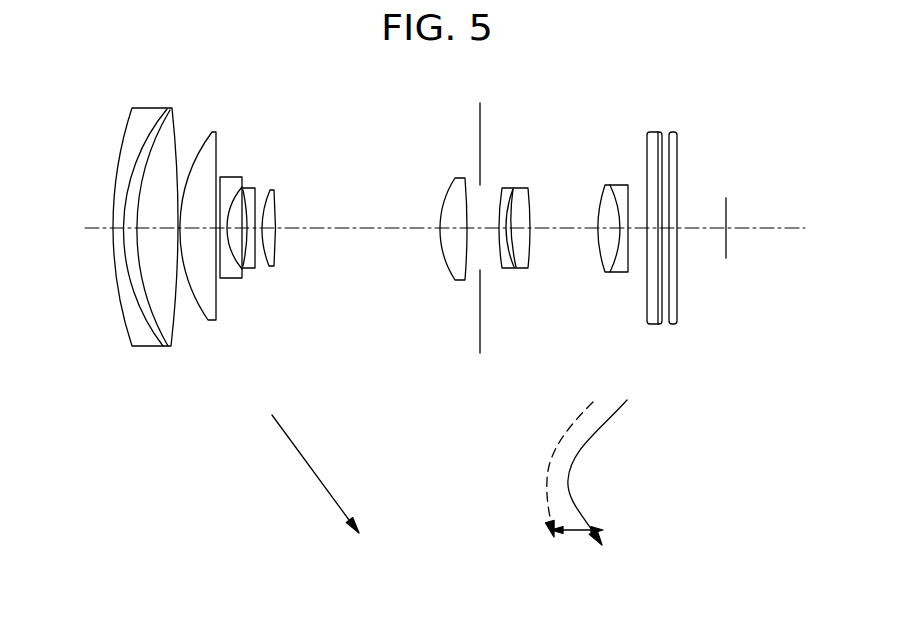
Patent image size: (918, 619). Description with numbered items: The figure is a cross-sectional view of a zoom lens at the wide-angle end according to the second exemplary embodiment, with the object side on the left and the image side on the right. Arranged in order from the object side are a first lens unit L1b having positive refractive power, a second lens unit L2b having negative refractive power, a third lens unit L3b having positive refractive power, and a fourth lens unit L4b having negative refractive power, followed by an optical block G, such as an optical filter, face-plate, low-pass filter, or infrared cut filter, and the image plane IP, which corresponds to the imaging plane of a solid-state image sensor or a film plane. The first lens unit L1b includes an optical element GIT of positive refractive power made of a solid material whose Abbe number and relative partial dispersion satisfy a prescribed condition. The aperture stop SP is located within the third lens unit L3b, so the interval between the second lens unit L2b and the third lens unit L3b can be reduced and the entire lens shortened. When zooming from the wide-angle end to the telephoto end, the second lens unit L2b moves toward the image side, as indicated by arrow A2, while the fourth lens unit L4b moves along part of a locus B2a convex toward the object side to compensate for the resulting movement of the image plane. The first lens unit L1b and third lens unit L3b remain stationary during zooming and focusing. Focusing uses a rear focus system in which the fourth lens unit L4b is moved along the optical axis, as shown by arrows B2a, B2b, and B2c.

The first lens unit L1b is at (198, 375).
The optical element GIT is at (153, 138).
The second lens unit L2b is at (303, 333).
The aperture stop SP is at (482, 212).
The third lens unit L3b is at (432, 382).
The fourth lens unit L4b is at (652, 342).
The optical block G is at (638, 128).
The image plane IP is at (727, 212).
The arrow A2 is at (302, 459).
The locus B2a is at (572, 467).
The arrow B2b is at (547, 473).
The arrow B2c is at (577, 535).